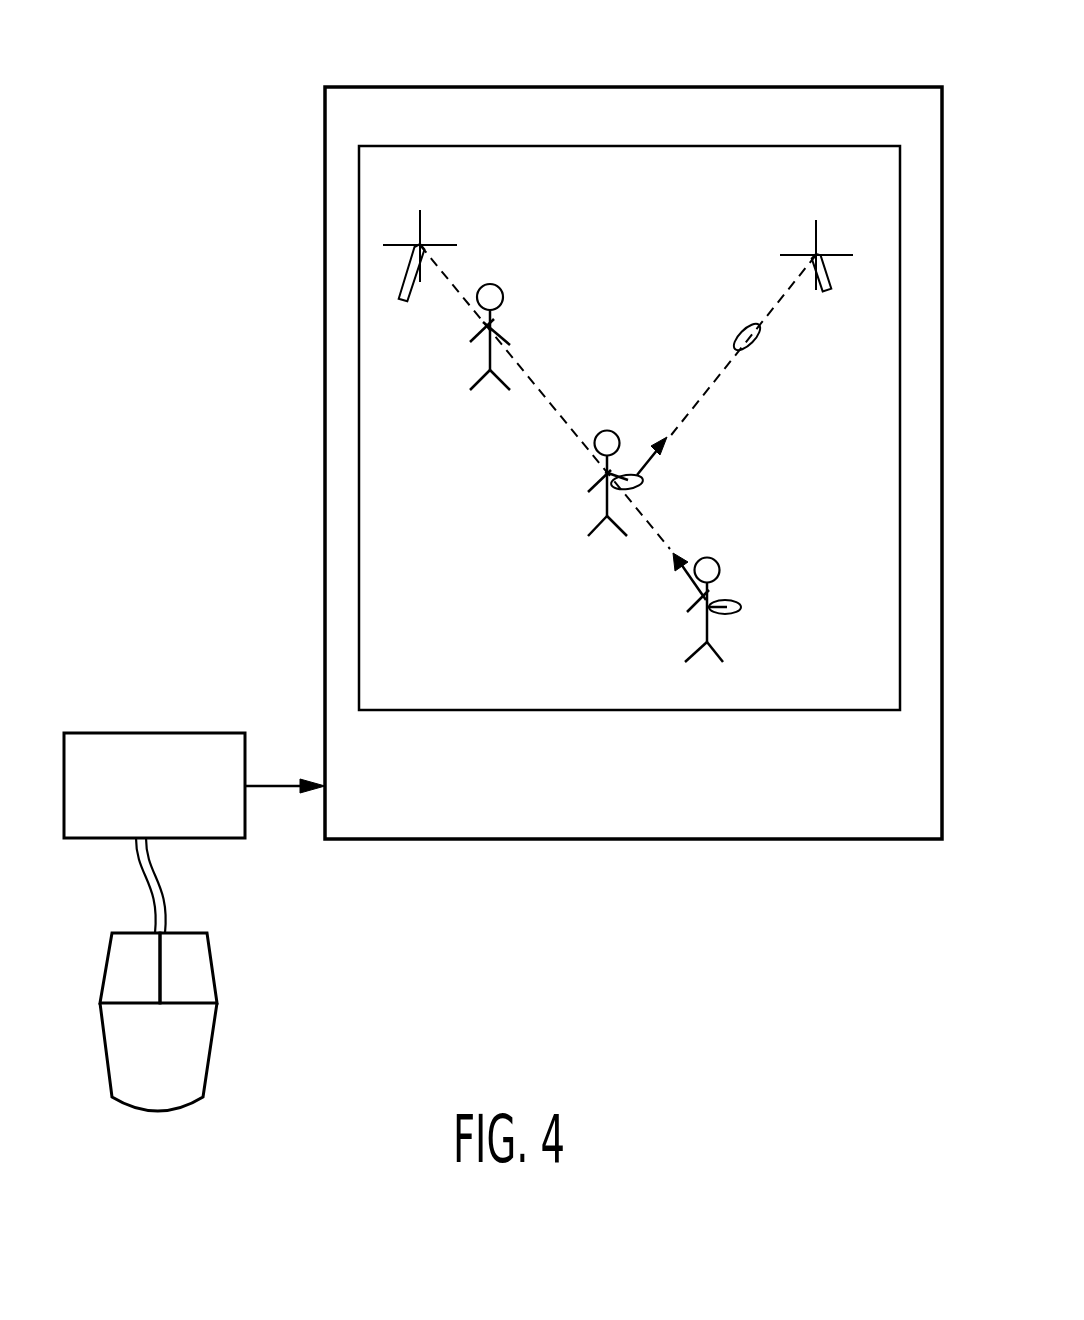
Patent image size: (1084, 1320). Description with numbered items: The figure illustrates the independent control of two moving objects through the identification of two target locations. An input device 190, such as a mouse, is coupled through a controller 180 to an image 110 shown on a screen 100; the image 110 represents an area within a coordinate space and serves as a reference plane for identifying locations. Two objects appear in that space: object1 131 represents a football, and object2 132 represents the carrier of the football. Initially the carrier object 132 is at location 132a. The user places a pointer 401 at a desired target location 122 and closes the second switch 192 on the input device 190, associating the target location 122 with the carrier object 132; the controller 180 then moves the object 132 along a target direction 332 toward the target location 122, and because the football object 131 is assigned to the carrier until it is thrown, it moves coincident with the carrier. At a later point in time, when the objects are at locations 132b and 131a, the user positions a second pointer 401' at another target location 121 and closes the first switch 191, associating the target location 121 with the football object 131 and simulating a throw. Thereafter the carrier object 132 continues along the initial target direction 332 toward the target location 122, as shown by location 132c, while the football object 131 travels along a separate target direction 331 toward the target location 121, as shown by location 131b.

The screen 100 is at (850, 822).
The image 110 is at (777, 168).
The target location 121 is at (816, 255).
The target location 122 is at (420, 245).
The pointer 401 is at (420, 298).
The pointer 401' is at (850, 298).
The object1 131 is at (741, 607).
The location of object1 131a is at (642, 486).
The location of object1 131b is at (752, 345).
The object2 132 is at (737, 624).
The location of object2 132a is at (693, 648).
The location of object2 132b is at (600, 499).
The location of object2 132c is at (488, 352).
The target direction 331 is at (672, 445).
The target direction 332 is at (671, 558).
The controller 180 is at (173, 816).
The input device 190 is at (266, 974).
The switch S1 191 is at (152, 998).
The switch S2 192 is at (188, 968).